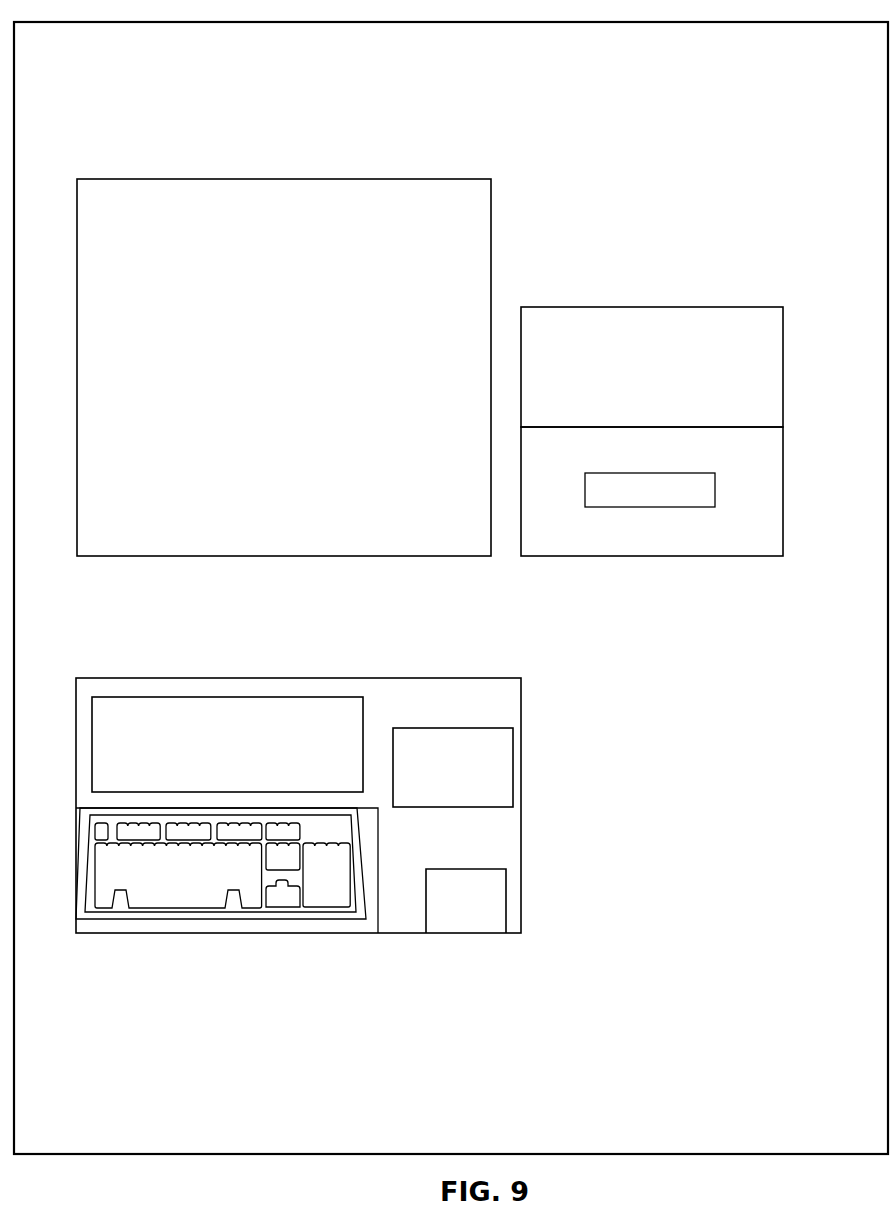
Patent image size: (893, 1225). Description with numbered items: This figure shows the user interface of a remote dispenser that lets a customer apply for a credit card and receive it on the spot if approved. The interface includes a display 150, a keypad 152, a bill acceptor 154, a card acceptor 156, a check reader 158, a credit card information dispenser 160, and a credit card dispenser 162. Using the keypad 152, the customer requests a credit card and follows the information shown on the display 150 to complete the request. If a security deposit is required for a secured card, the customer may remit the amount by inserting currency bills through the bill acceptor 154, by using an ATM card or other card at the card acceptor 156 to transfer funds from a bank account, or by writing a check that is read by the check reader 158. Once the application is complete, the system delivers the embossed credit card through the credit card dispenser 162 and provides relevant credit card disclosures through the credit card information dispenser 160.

The display 150 is at (95, 178).
The keypad 152 is at (76, 872).
The bill acceptor 154 is at (513, 765).
The card acceptor 156 is at (506, 900).
The check reader 158 is at (237, 697).
The credit card information dispenser 160 is at (783, 369).
The credit card dispenser 162 is at (783, 490).